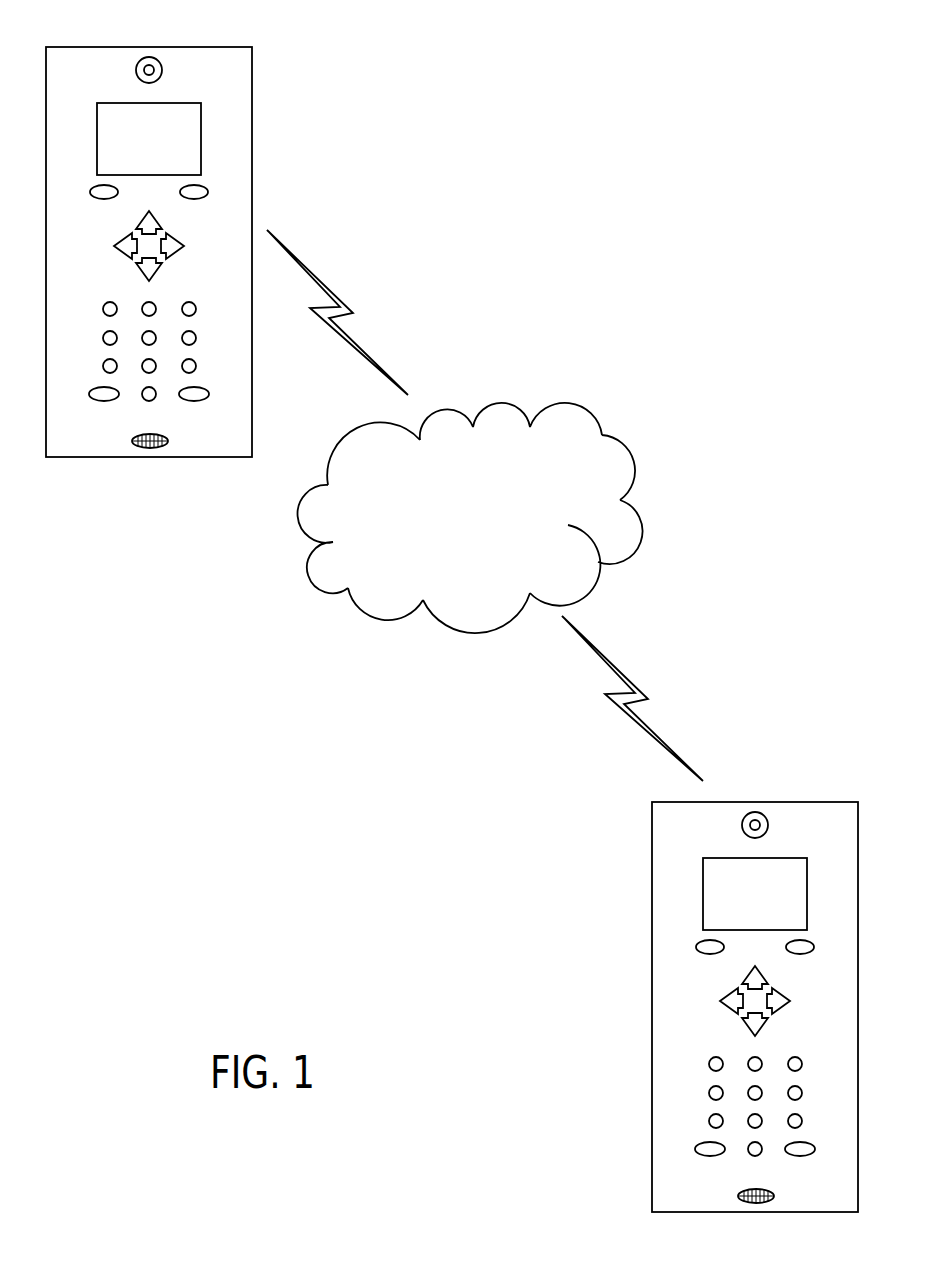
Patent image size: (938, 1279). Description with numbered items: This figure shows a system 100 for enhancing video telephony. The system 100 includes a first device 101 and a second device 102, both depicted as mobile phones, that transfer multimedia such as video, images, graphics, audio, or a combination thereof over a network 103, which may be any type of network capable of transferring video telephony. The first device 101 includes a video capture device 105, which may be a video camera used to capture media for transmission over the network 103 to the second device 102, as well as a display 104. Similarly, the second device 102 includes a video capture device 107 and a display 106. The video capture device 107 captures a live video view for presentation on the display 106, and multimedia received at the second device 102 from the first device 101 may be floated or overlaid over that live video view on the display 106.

The system 100 is at (700, 175).
The first device 101 is at (253, 70).
The second device 102 is at (716, 983).
The network 103 is at (563, 402).
The display 104 is at (201, 140).
The video capture device 105 is at (149, 57).
The display 106 is at (697, 894).
The video capture device 107 is at (766, 796).